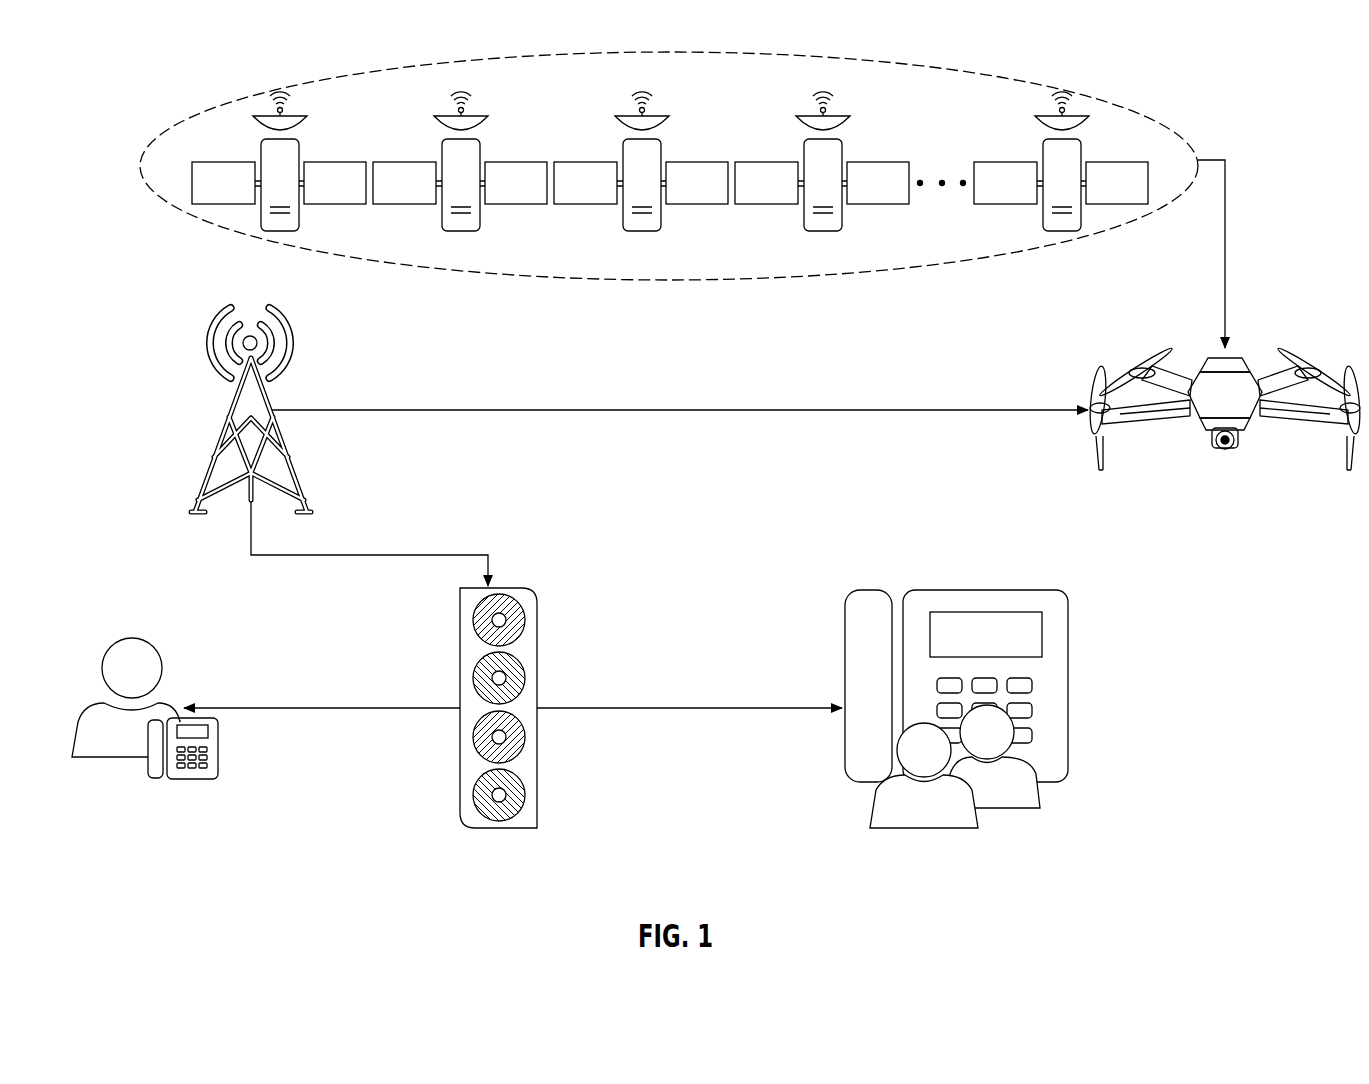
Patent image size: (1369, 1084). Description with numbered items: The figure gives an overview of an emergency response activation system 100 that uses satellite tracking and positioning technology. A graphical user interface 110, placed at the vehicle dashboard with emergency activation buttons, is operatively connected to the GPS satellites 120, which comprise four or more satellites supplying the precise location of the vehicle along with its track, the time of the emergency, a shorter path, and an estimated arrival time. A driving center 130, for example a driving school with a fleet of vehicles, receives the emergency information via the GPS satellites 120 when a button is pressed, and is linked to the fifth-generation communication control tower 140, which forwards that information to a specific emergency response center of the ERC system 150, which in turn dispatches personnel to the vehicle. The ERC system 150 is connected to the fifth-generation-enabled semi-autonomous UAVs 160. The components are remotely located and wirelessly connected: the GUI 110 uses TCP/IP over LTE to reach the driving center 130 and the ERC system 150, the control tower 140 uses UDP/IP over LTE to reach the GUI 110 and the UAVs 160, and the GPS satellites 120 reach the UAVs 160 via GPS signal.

The emergency response activation system 100 is at (1285, 86).
The graphical user interface 110 is at (556, 840).
The GPS satellites 120 is at (221, 92).
The driving center 130 is at (114, 632).
The 5G-communication control tower 140 is at (209, 306).
The emergency response center system 150 is at (1060, 806).
The 5G-enabled semi-autonomous unmanned aerial vehicle 160 is at (1256, 475).